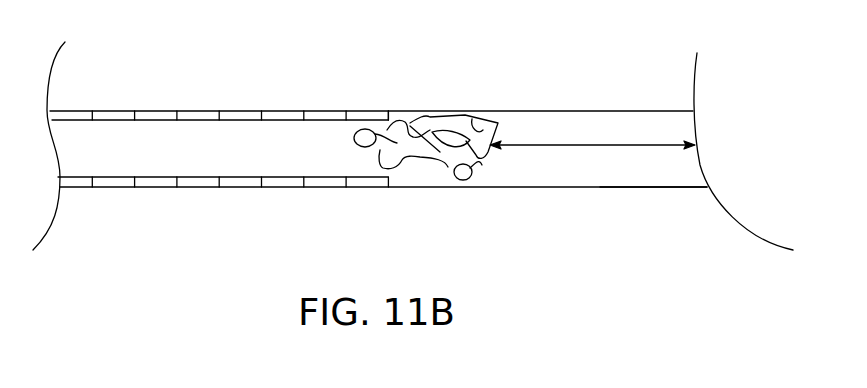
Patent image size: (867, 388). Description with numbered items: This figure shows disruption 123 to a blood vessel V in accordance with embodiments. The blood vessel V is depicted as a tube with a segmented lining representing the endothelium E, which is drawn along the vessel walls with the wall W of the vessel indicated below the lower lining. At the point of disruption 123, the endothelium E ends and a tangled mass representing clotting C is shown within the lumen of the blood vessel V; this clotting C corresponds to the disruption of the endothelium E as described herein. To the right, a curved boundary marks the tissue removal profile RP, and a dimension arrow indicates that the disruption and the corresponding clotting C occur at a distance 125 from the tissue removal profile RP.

The blood vessel V is at (147, 140).
The endothelium E is at (240, 182).
The disruption 123 is at (395, 112).
The distance 125 is at (564, 145).
The clotting C is at (450, 163).
The vessel wall W is at (628, 188).
The tissue removal profile RP is at (753, 238).